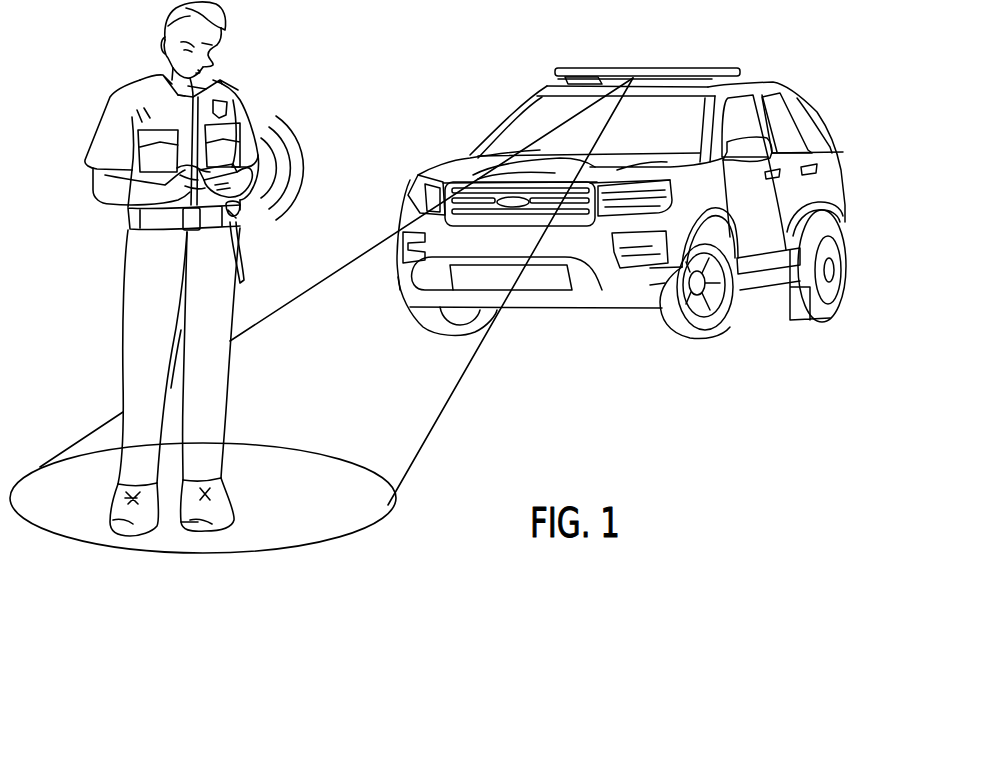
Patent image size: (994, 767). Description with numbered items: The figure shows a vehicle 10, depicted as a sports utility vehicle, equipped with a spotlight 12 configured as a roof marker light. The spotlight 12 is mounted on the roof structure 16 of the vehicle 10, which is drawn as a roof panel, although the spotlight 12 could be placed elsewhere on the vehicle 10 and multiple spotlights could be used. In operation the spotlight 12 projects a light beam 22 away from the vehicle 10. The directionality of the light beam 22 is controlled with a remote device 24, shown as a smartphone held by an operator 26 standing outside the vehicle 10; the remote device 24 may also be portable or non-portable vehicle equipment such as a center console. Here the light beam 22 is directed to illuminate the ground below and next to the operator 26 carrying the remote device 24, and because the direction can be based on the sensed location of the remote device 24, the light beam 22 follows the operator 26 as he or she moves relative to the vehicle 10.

The vehicle 10 is at (803, 54).
The spotlight 12 is at (630, 66).
The roof structure 16 is at (684, 82).
The light beam 22 is at (438, 383).
The remote device 24 is at (235, 172).
The operator 26 is at (110, 95).